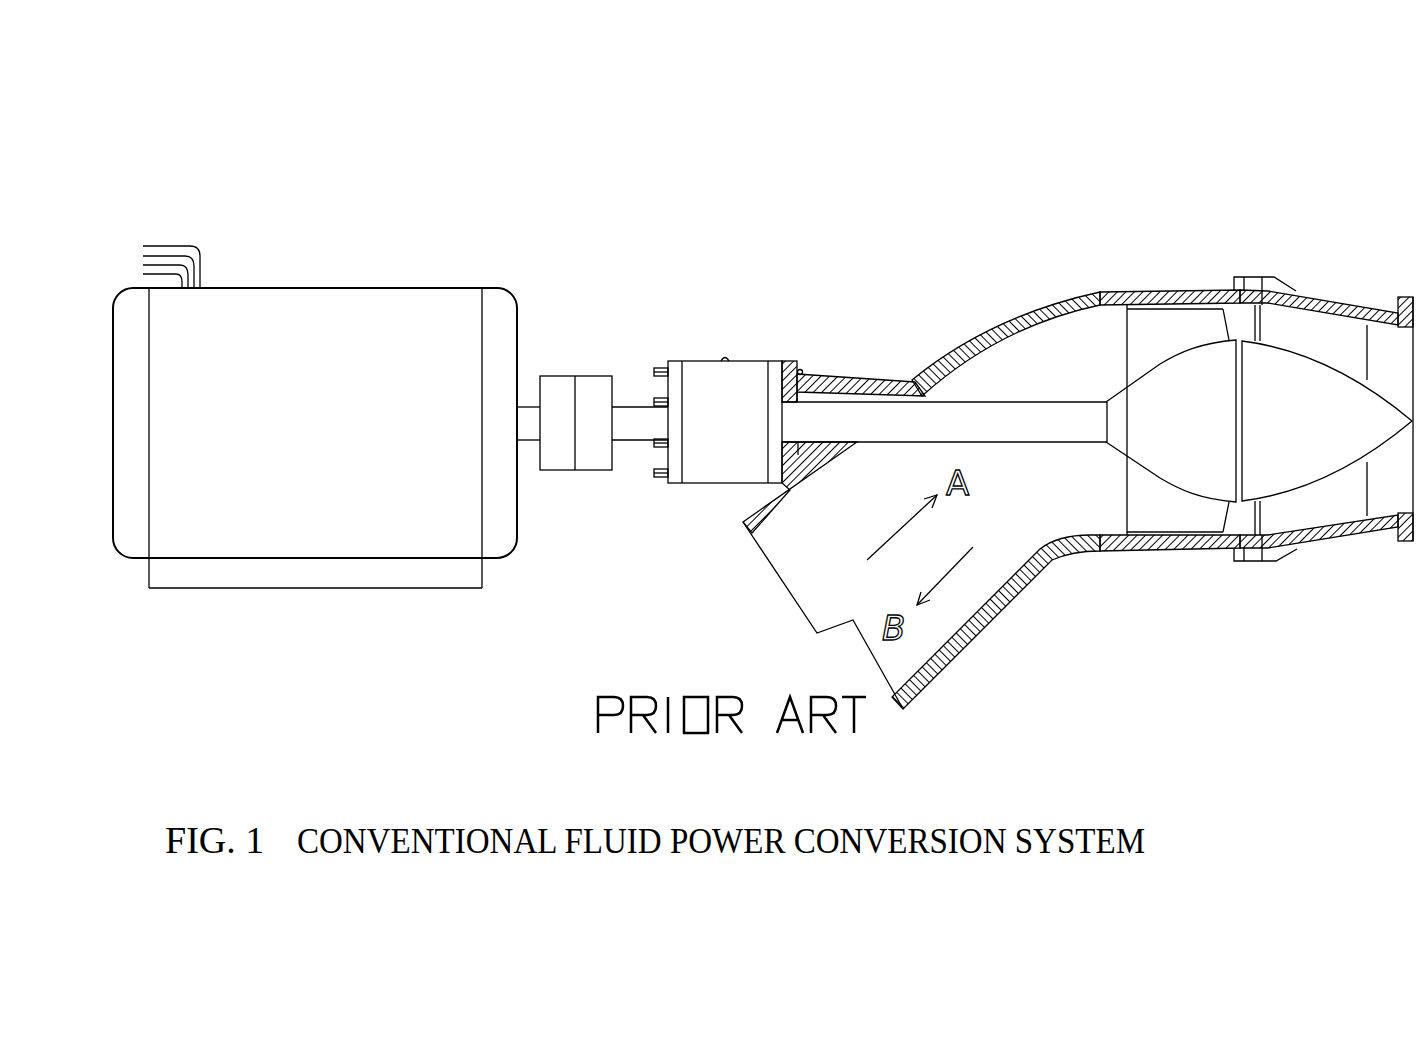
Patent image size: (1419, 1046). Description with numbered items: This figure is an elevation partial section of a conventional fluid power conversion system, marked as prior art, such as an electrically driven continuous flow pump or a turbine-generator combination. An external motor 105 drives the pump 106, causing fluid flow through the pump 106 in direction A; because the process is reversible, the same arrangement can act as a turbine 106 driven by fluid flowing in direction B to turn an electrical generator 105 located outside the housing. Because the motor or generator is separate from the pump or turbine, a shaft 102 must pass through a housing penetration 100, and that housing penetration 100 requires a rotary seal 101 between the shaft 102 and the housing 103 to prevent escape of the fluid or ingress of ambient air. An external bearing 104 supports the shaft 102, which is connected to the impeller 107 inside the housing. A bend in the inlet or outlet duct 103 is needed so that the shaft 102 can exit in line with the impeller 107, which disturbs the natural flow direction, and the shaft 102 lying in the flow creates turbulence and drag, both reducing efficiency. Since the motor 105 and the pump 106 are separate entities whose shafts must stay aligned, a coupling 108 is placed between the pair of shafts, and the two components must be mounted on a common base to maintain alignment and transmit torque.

The housing penetration 100 is at (850, 397).
The rotary seal 101 is at (815, 380).
The shaft 102 is at (963, 425).
The housing 103 is at (1027, 297).
The external bearing 104 is at (748, 437).
The external motor 105 is at (330, 446).
The pump 106 is at (1106, 278).
The impeller 107 is at (1169, 512).
The coupling 108 is at (578, 375).